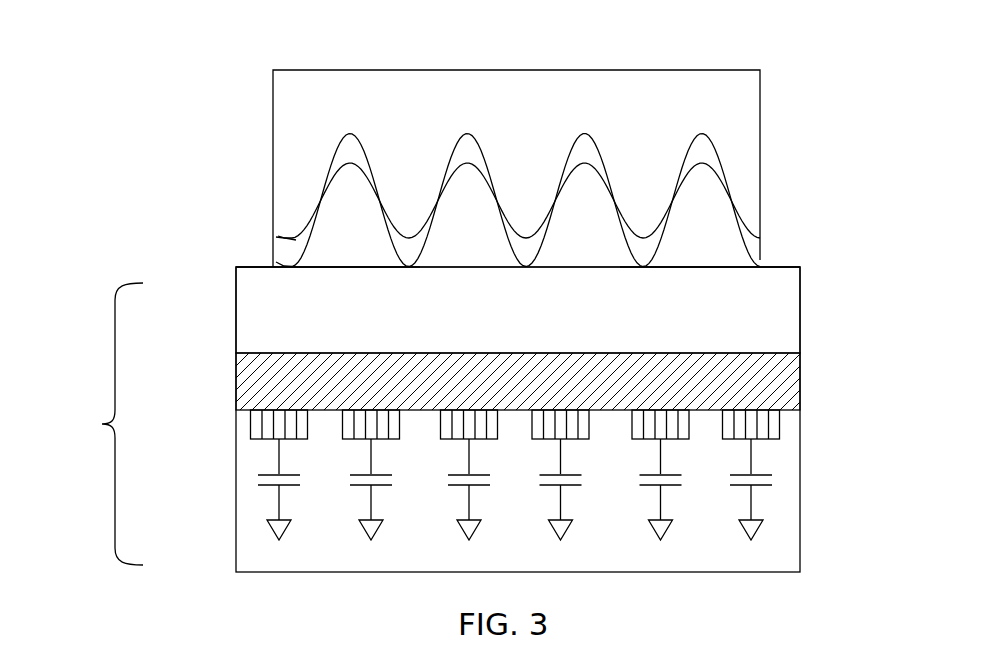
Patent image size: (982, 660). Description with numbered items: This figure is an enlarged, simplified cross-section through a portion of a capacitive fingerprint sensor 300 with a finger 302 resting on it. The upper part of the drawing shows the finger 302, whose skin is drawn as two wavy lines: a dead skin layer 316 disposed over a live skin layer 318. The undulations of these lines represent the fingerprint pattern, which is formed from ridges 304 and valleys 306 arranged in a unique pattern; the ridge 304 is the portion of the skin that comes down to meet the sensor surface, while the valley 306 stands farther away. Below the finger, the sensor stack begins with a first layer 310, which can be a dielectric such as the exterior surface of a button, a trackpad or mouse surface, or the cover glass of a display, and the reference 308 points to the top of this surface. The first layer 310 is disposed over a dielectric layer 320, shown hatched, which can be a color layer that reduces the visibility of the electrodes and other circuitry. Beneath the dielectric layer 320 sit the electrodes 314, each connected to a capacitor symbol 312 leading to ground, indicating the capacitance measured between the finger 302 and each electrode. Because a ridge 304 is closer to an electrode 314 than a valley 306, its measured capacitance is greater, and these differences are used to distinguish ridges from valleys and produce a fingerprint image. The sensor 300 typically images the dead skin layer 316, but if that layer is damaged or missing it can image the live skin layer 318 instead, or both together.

The capacitive fingerprint sensor 300 is at (101, 424).
The finger 302 is at (318, 93).
The ridge 304 is at (272, 266).
The valley 306 is at (714, 167).
The cover surface corner 308 is at (800, 267).
The first layer 310 is at (800, 308).
The capacitor 312 is at (253, 478).
The electrodes 314 is at (251, 425).
The dead skin layer 316 is at (298, 248).
The live skin layer 318 is at (355, 147).
The dielectric layer 320 is at (800, 378).